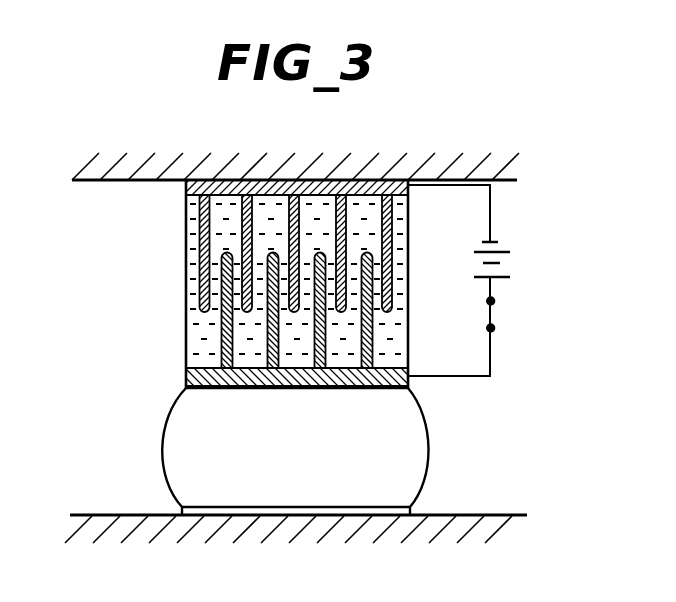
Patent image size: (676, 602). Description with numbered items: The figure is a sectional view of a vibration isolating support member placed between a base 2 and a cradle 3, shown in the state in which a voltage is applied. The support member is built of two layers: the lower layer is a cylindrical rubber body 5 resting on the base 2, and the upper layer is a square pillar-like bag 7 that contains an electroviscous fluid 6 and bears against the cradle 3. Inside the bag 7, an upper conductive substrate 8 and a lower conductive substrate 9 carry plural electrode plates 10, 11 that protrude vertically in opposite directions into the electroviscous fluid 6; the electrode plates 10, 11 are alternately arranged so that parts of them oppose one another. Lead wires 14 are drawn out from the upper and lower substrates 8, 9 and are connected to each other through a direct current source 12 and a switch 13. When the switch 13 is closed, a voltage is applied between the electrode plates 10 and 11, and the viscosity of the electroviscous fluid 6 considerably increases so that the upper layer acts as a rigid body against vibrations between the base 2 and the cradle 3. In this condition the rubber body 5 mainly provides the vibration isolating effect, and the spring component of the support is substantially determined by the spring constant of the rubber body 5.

The base 2 is at (108, 515).
The cradle 3 is at (92, 181).
The cylindrical rubber body 5 is at (165, 433).
The electroviscous fluid 6 is at (197, 325).
The square pillar-like bag 7 is at (185, 263).
The upper conductive substrate 8 is at (183, 192).
The lower conductive substrate 9 is at (183, 377).
The electrode plates 10 is at (401, 221).
The electrode plates 11 is at (377, 337).
The direct current source 12 is at (503, 260).
The switch 13 is at (493, 313).
The lead wires 14 is at (493, 210).